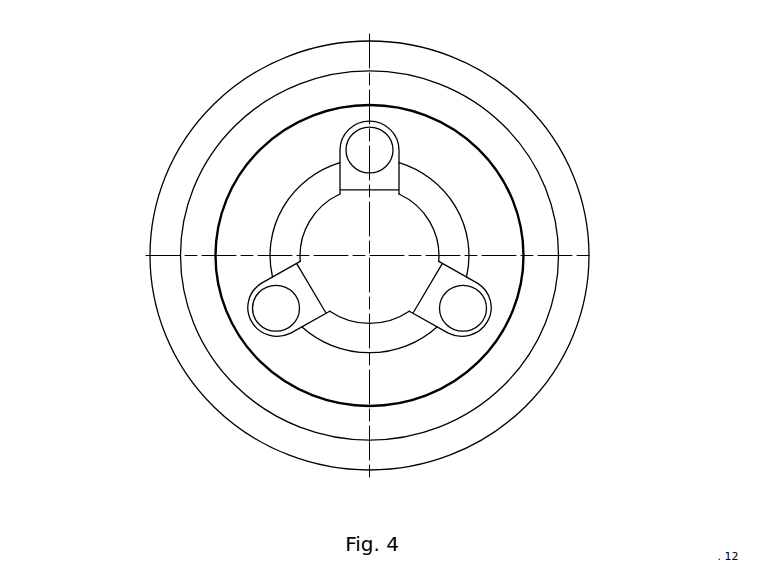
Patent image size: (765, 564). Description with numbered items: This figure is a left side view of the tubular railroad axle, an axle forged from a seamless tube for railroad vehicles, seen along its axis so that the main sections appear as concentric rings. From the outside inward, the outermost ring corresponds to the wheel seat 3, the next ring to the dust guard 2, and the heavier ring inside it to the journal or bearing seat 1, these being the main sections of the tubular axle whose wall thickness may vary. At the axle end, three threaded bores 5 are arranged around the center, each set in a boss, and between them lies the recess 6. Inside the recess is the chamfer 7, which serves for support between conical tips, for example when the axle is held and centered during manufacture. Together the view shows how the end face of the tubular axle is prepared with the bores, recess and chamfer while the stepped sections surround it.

The bearing seat 1 is at (218, 228).
The dust guard 2 is at (195, 178).
The wheel seat 3 is at (195, 130).
The threaded bores 5 is at (397, 148).
The recess 6 is at (387, 180).
The chamfer 7 is at (442, 226).